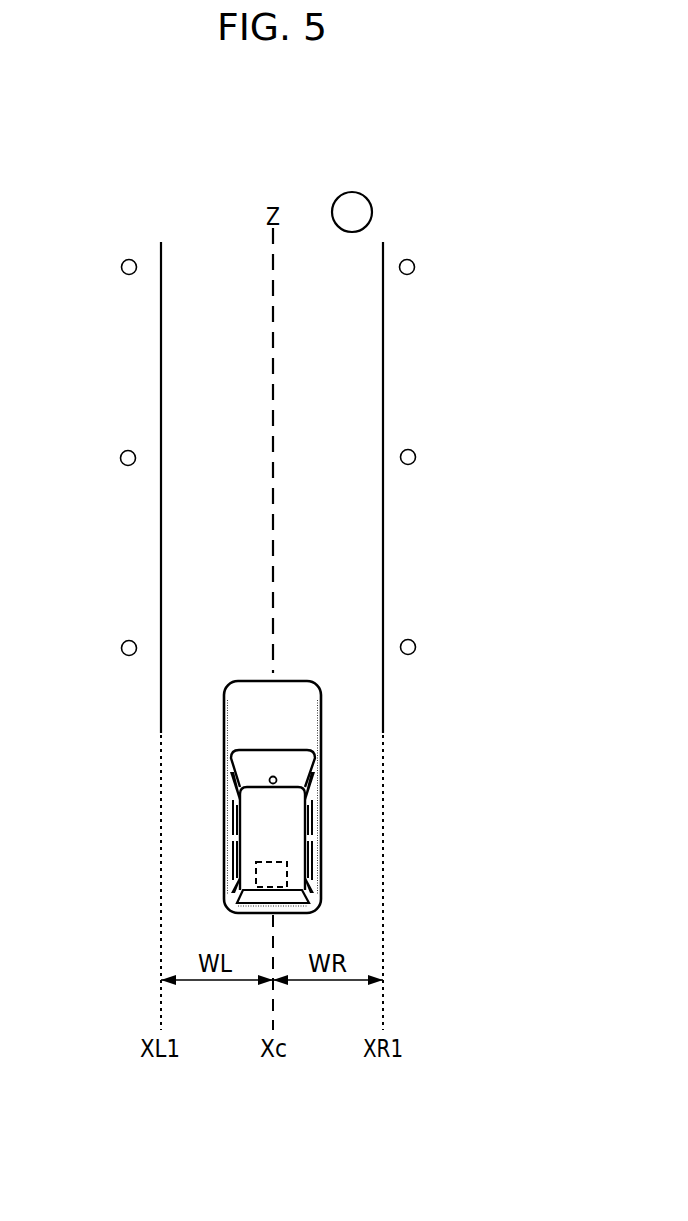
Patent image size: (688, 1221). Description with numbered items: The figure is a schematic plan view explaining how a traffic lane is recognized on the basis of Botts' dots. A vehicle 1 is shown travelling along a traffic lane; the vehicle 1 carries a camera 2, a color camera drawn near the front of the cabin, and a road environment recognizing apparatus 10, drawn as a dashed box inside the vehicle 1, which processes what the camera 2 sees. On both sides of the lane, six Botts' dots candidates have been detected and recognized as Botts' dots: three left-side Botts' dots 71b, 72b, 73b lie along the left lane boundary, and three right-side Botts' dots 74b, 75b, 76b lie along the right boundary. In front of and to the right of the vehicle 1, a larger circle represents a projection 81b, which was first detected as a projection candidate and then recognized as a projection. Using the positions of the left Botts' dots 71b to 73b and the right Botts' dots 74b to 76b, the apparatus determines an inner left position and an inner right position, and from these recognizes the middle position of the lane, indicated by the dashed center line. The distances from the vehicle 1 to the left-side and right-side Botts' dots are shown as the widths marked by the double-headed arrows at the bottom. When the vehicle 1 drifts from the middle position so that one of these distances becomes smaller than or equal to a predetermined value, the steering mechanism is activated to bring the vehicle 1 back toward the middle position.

The vehicle 1 is at (288, 842).
The camera 2 is at (277, 777).
The road environment recognizing apparatus 10 is at (255, 868).
The Botts' dot 71b is at (123, 643).
The Botts' dot 72b is at (123, 452).
The Botts' dot 73b is at (124, 262).
The Botts' dot 74b is at (413, 642).
The Botts' dot 75b is at (413, 452).
The Botts' dot 76b is at (412, 262).
The projection 81b is at (353, 203).